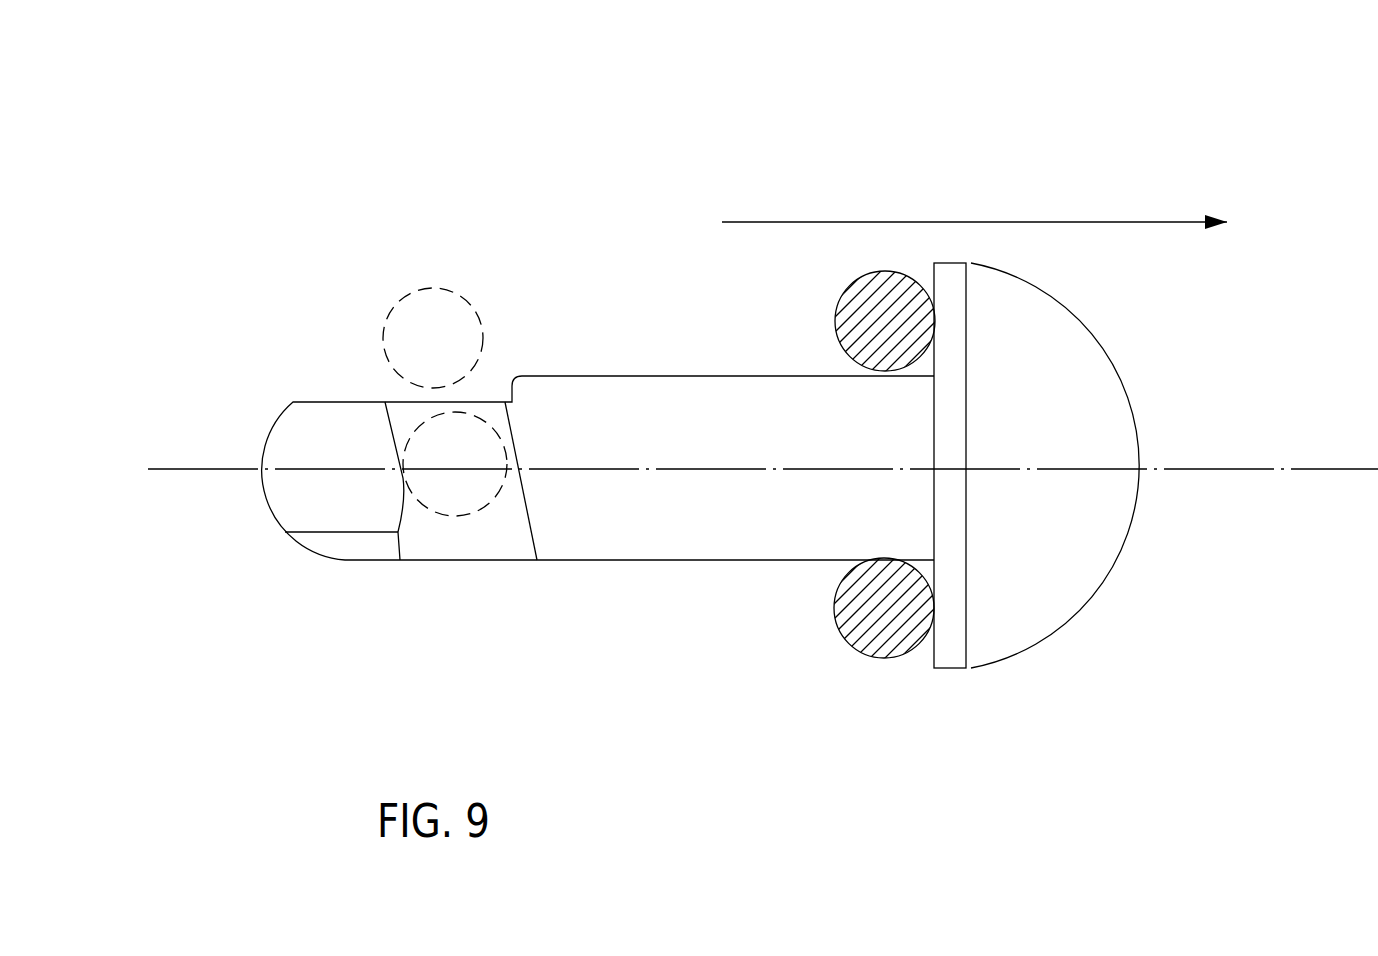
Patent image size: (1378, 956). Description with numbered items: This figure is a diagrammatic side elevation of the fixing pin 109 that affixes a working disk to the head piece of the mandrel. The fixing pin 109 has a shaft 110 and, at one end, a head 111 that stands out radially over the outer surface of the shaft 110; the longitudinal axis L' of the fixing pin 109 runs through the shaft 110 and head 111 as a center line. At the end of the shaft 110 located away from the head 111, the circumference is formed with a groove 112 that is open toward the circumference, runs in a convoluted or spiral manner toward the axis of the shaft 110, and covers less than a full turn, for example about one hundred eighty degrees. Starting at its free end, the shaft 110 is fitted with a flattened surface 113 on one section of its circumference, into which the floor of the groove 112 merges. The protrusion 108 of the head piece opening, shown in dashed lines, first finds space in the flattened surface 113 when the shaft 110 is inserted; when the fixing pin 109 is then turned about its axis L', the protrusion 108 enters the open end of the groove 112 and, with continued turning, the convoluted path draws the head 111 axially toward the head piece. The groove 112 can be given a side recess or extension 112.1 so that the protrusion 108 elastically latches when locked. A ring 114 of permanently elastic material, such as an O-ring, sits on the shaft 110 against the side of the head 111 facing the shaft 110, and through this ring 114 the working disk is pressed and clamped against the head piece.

The protrusion 108 is at (467, 337).
The fixing pin 109 is at (768, 297).
The shaft 110 is at (590, 421).
The head 111 is at (1072, 382).
The groove 112 is at (500, 517).
The recess or extension 112.1 is at (285, 532).
The flattened surface 113 is at (313, 390).
The ring 114 is at (853, 335).
The longitudinal axis L' is at (763, 506).